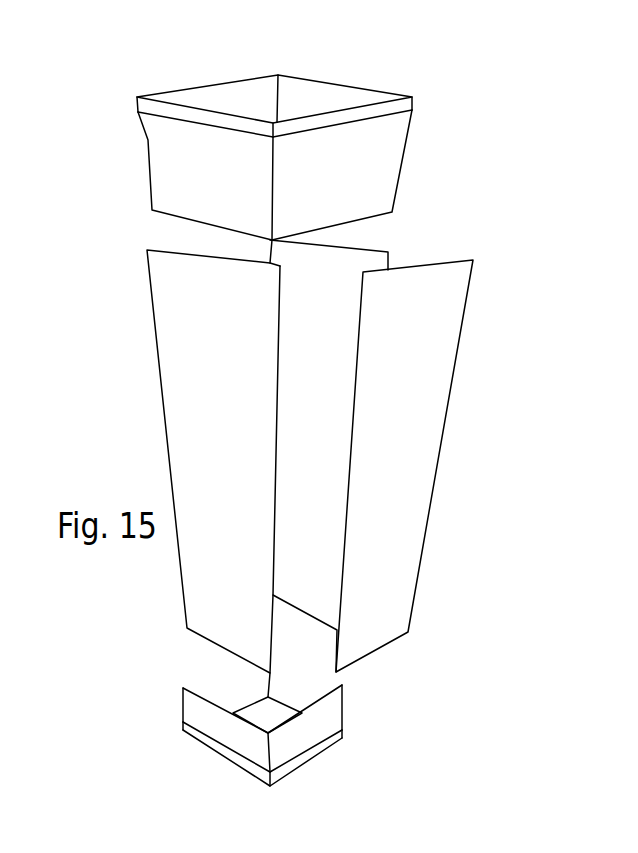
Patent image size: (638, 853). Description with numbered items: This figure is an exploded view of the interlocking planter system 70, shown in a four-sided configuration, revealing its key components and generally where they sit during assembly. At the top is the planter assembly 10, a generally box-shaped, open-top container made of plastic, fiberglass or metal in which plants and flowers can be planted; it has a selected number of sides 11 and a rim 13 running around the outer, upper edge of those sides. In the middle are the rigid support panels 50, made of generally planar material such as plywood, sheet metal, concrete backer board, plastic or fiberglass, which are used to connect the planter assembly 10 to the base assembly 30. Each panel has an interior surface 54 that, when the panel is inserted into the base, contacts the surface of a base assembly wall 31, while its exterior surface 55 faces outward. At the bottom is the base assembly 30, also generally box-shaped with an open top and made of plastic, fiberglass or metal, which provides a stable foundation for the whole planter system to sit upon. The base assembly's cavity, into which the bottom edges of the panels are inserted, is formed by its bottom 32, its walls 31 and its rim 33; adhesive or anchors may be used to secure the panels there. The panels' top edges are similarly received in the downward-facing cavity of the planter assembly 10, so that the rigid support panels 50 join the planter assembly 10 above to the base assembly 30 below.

The planter assembly 10 is at (279, 144).
The sides 11 is at (173, 181).
The rim 13 is at (341, 188).
The base assembly 30 is at (279, 732).
The walls 31 is at (238, 685).
The bottom 32 is at (272, 717).
The rim 33 is at (324, 750).
The rigid support panels 50 is at (235, 248).
The interior surface 54 is at (337, 417).
The exterior surface 55 is at (413, 417).
The interlocking planter system 70 is at (280, 455).